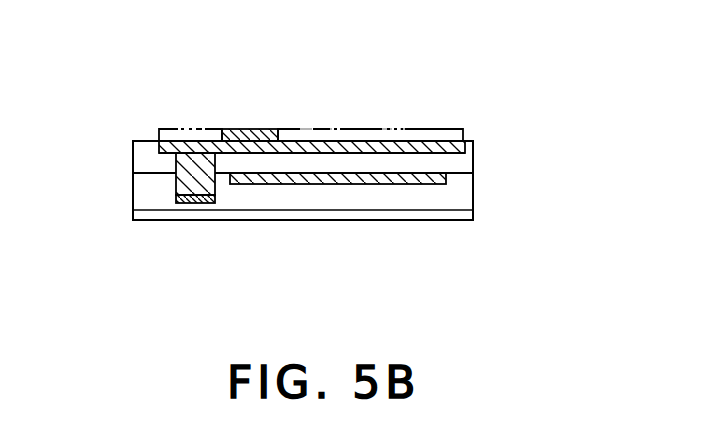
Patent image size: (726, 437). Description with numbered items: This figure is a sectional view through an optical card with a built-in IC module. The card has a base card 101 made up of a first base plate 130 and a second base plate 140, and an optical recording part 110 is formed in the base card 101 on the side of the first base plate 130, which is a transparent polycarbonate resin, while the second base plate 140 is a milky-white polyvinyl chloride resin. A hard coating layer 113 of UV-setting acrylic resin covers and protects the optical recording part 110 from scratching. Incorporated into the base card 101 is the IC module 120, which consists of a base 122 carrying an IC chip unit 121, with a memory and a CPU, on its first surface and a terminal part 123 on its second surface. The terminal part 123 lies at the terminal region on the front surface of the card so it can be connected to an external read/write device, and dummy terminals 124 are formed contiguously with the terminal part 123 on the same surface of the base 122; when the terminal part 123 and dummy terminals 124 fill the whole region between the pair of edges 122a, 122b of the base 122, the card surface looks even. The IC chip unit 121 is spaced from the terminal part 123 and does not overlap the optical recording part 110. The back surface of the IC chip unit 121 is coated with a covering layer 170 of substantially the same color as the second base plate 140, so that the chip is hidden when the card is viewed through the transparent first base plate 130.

The base card 101 is at (422, 167).
The optical recording part 110 is at (360, 184).
The hard coating layer 113 is at (217, 221).
The IC module 120 is at (298, 116).
The IC chip unit 121 is at (173, 168).
The base 122 is at (305, 153).
The edge of the base 122a is at (160, 146).
The edge of the base 122b is at (460, 155).
The terminal part 123 is at (272, 129).
The dummy terminals 124 is at (418, 128).
The first base plate 130 is at (416, 190).
The second base plate 140 is at (477, 148).
The covering layer 170 is at (198, 203).